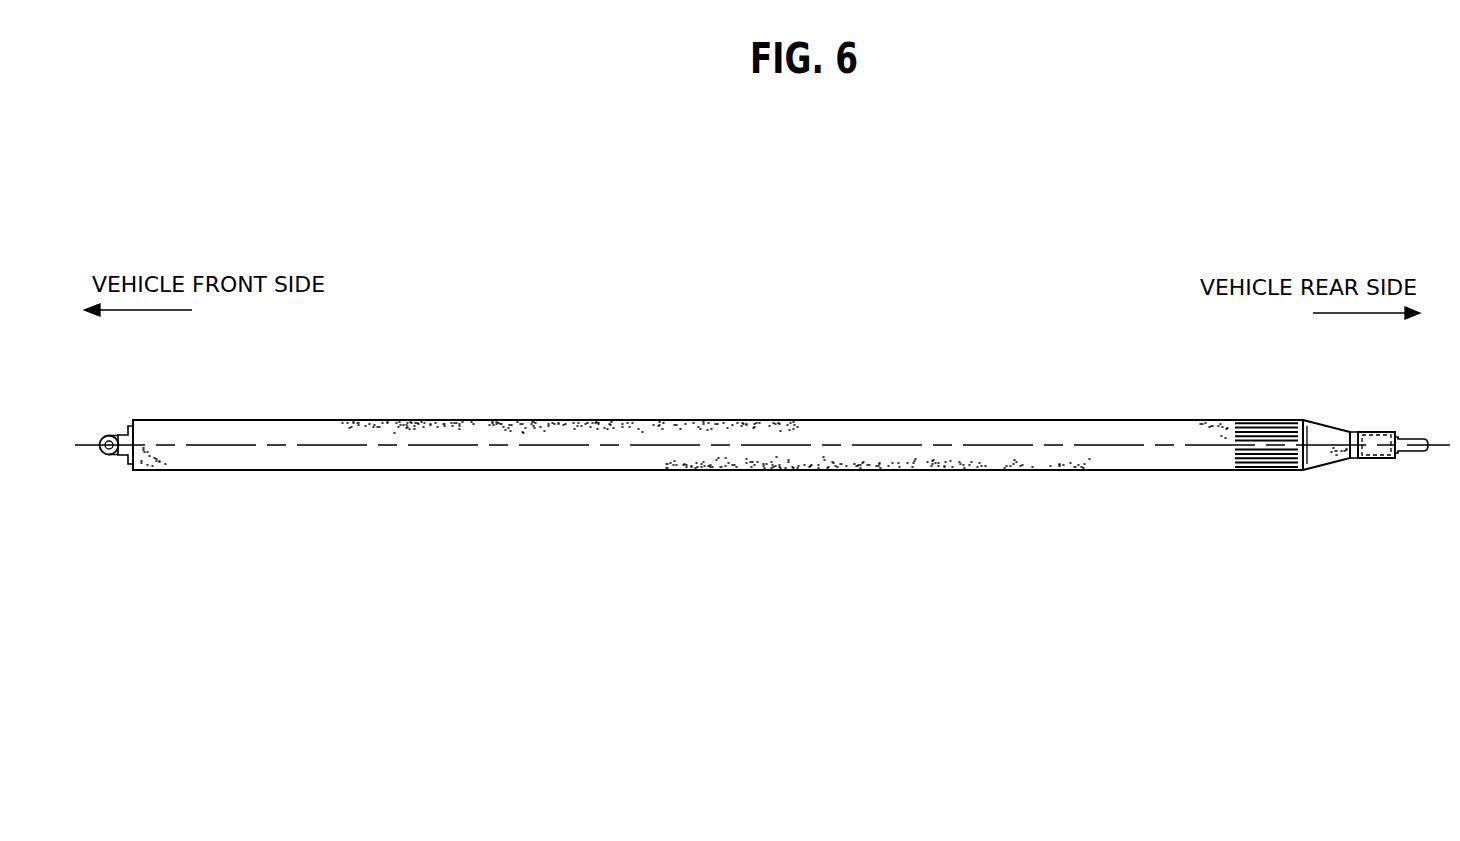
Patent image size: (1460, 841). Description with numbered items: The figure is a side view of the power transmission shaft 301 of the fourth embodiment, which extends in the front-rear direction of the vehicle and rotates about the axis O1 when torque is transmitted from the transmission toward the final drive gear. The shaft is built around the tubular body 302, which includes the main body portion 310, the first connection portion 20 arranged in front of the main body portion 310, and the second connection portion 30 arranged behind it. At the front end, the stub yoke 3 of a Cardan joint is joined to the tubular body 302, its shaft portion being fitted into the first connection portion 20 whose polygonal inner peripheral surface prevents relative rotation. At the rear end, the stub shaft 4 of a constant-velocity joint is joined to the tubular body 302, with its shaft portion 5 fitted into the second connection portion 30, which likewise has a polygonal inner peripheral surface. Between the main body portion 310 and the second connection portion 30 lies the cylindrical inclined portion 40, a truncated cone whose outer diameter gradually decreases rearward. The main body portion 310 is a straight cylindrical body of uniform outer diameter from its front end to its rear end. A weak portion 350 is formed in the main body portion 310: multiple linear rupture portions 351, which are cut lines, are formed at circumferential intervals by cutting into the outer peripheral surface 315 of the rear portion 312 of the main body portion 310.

The stub yoke 3 is at (125, 432).
The first connection portion 20 is at (188, 458).
The axis O1 is at (541, 445).
The tubular body 302 is at (694, 398).
The power transmission shaft 301 is at (993, 382).
The main body portion 310 is at (1010, 462).
The outer peripheral surface 315 is at (1118, 455).
The weak portion 350 is at (1249, 427).
The rupture portions 351 is at (1252, 432).
The rear portion 312 is at (1312, 425).
The shaft portion 5 is at (1373, 437).
The stub shaft 4 is at (1410, 439).
The inclined portion 40 is at (1318, 450).
The second connection portion 30 is at (1385, 443).